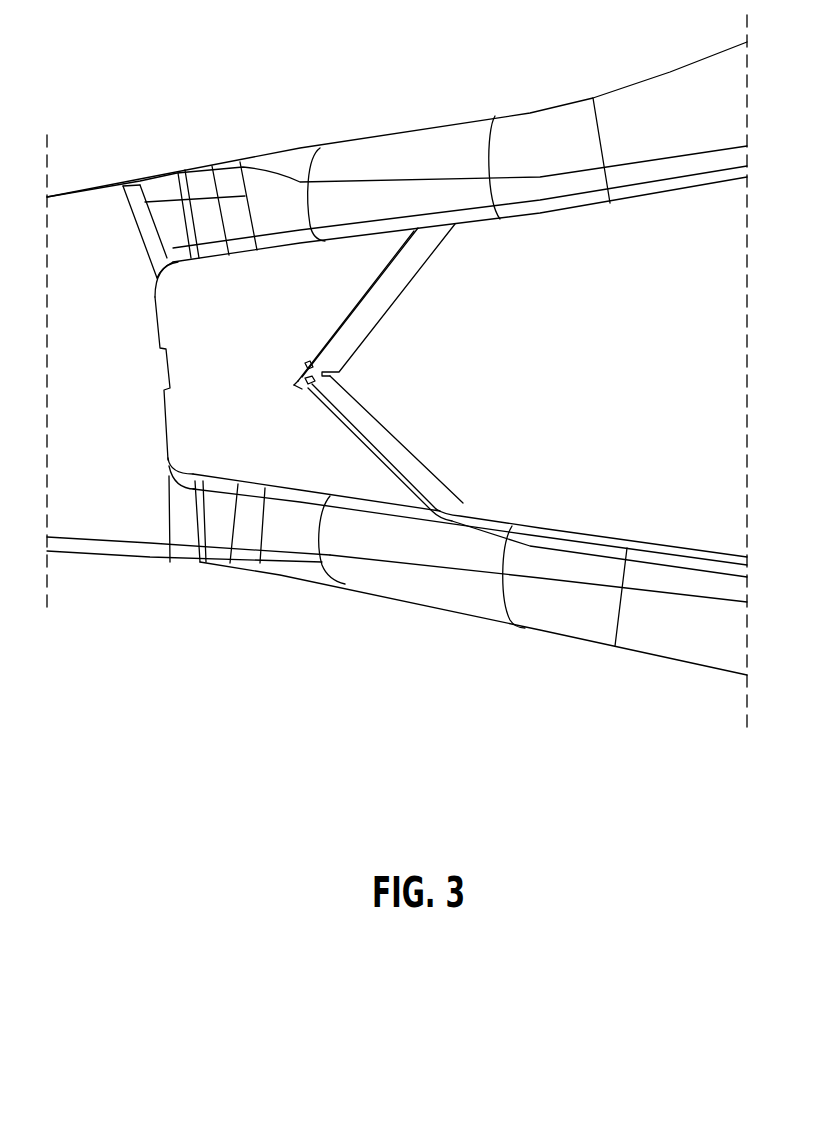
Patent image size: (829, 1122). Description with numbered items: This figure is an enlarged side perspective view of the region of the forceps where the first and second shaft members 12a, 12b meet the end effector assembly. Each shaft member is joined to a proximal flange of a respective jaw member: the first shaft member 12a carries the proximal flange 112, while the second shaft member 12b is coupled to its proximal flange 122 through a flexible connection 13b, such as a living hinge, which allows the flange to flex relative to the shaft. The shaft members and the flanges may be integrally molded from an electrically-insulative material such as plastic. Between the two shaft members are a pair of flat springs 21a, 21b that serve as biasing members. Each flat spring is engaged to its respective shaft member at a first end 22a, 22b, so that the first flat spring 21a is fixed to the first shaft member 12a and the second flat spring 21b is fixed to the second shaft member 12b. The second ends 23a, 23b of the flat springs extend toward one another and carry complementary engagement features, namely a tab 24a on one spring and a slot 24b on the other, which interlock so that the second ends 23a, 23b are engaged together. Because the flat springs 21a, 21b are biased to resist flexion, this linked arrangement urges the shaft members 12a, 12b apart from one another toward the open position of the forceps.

The first shaft member 12a is at (695, 633).
The second shaft member 12b is at (673, 88).
The flexible connection 13b is at (203, 200).
The flat spring 21a is at (418, 470).
The flat spring 21b is at (400, 280).
The first end of flat spring 22a is at (643, 545).
The first end of flat spring 22b is at (453, 227).
The second end of flat spring 23a is at (355, 385).
The second end of flat spring 23b is at (363, 293).
The tab 24a is at (310, 372).
The slot 24b is at (305, 385).
The proximal flange 112 is at (122, 520).
The proximal flange 122 is at (95, 217).